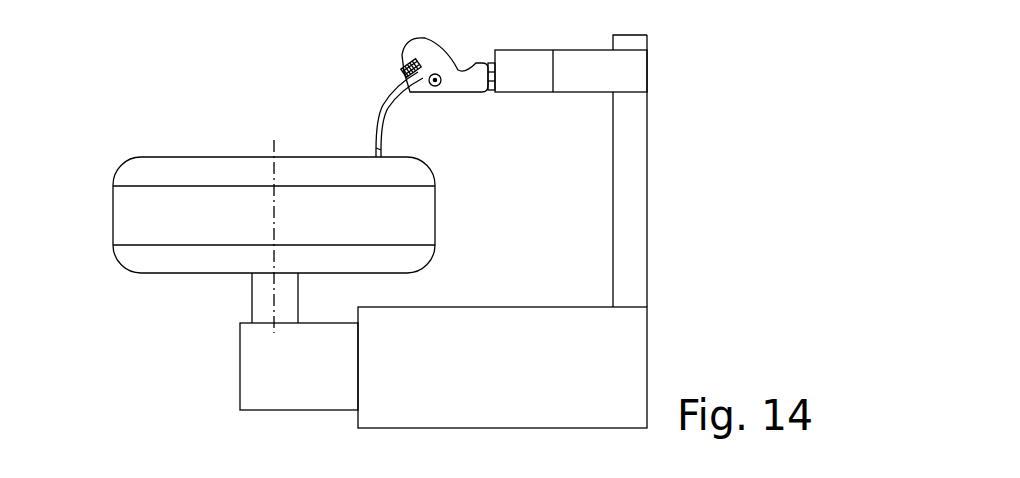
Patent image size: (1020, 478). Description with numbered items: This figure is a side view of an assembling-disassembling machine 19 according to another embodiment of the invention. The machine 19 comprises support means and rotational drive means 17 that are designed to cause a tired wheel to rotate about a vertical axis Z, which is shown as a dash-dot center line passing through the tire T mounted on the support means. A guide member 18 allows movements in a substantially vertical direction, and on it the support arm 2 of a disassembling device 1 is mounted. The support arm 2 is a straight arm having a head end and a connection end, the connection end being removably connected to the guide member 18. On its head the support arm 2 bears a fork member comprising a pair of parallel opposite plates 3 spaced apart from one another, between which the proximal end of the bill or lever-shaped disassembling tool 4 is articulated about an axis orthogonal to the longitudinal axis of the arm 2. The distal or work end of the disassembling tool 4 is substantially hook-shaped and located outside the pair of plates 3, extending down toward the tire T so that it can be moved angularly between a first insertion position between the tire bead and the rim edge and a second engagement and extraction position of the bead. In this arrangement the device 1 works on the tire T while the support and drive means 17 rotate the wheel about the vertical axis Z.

The disassembling device 1 is at (410, 83).
The support arm 2 is at (505, 45).
The pair of parallel opposite plates 3 is at (408, 45).
The disassembling tool 4 is at (380, 105).
The support means and rotational drive means 17 is at (250, 300).
The guide member 18 is at (612, 155).
The assembling-disassembling machine 19 is at (681, 188).
The tire T is at (113, 225).
The axis z-z Z is at (276, 236).